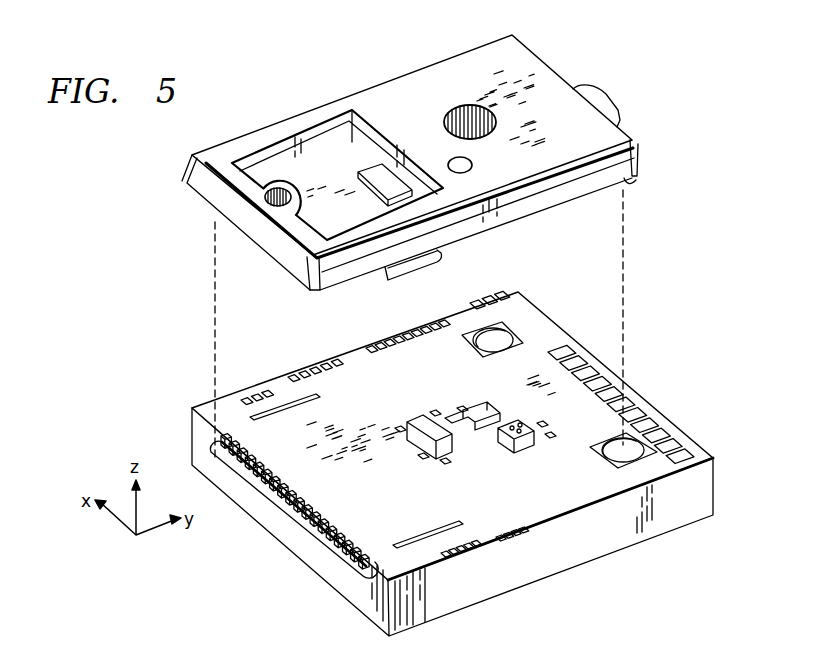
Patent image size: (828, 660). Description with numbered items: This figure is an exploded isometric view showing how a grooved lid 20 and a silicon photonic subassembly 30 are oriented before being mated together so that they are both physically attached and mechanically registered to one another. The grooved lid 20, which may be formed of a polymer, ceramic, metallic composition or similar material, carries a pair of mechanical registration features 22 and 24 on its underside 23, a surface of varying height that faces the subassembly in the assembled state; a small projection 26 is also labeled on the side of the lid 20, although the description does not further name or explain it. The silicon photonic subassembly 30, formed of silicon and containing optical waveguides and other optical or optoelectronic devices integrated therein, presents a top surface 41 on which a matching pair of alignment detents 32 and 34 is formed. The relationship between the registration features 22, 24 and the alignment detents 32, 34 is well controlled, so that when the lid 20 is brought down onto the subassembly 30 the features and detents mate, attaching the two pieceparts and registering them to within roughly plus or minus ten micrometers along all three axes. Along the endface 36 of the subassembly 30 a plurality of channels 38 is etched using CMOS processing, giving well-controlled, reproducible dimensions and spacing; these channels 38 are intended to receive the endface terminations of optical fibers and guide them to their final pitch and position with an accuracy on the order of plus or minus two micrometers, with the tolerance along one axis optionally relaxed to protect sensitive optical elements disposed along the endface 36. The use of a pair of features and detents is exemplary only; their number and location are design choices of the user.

The grooved lid 20 is at (438, 159).
The registration feature 22 is at (634, 181).
The underside 23 is at (543, 218).
The registration feature 24 is at (540, 50).
The latch tab 26 is at (356, 283).
The silicon photonic subassembly 30 is at (455, 463).
The alignment detent 32 is at (627, 455).
The alignment detent 34 is at (497, 343).
The endface 36 is at (367, 592).
The channels 38 is at (280, 515).
The top surface 41 is at (352, 387).